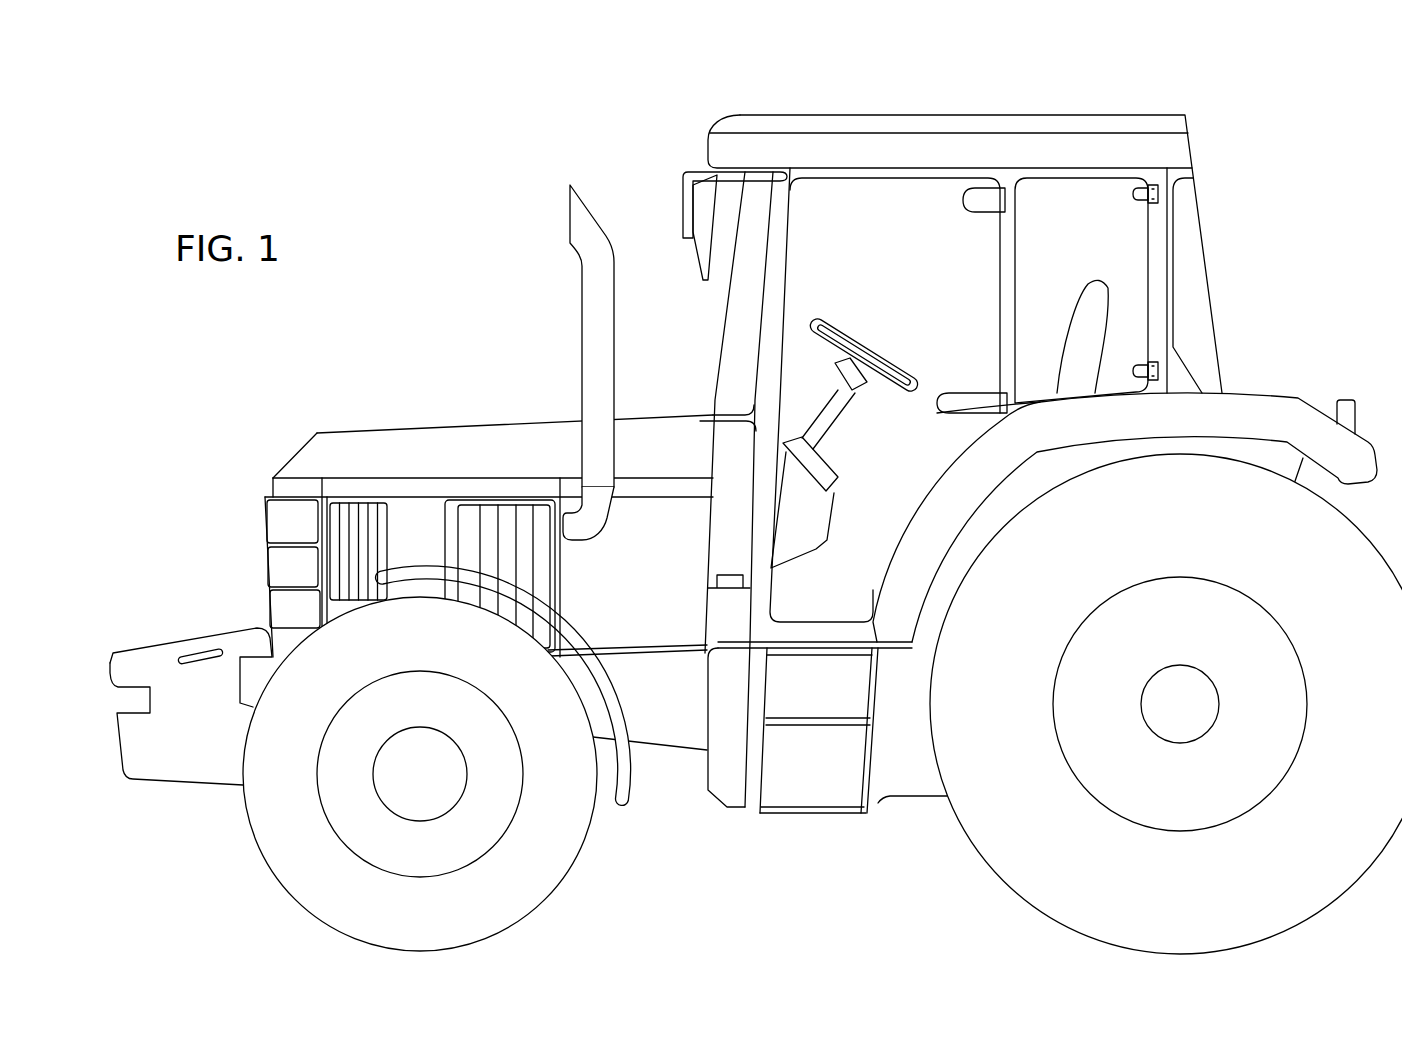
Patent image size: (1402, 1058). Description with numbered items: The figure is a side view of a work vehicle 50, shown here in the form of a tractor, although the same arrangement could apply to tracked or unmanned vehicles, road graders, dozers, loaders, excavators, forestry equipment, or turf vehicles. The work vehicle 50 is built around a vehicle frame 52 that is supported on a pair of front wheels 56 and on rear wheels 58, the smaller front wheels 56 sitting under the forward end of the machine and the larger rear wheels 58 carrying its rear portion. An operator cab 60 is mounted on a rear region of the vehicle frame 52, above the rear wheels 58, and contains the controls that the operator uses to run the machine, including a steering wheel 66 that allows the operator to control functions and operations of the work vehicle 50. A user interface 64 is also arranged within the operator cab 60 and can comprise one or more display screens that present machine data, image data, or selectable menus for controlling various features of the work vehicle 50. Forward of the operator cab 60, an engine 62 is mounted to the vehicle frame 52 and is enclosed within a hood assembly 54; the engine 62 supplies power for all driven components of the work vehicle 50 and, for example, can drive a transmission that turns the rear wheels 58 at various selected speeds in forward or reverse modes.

The work vehicle 50 is at (1268, 97).
The vehicle frame 52 is at (673, 708).
The hood assembly 54 is at (337, 428).
The front wheels 56 is at (497, 875).
The rear wheels 58 is at (1250, 872).
The operator cab 60 is at (1183, 150).
The engine 62 is at (508, 517).
The user interface 64 is at (826, 470).
The steering wheel 66 is at (845, 338).